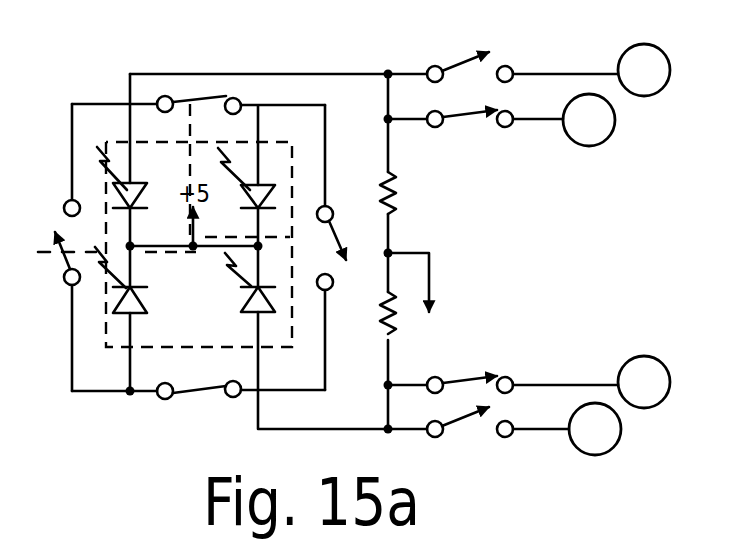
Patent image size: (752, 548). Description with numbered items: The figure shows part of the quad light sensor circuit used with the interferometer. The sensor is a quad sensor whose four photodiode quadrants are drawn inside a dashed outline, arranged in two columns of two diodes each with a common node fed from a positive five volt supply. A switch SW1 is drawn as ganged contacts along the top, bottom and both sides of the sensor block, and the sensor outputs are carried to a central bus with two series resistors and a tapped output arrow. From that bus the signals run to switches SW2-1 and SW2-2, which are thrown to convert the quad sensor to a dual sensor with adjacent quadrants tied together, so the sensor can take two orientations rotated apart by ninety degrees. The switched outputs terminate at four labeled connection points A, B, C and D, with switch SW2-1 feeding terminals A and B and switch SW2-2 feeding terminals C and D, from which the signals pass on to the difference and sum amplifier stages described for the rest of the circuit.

The switch SW1 is at (192, 236).
The switch SW2-1 is at (477, 72).
The switch SW2-2 is at (474, 425).
The terminal A is at (644, 70).
The terminal B is at (589, 120).
The terminal C is at (644, 382).
The terminal D is at (595, 429).